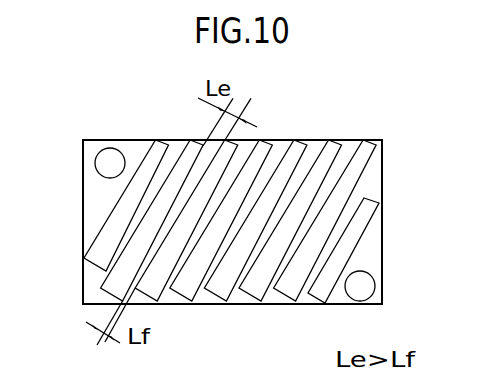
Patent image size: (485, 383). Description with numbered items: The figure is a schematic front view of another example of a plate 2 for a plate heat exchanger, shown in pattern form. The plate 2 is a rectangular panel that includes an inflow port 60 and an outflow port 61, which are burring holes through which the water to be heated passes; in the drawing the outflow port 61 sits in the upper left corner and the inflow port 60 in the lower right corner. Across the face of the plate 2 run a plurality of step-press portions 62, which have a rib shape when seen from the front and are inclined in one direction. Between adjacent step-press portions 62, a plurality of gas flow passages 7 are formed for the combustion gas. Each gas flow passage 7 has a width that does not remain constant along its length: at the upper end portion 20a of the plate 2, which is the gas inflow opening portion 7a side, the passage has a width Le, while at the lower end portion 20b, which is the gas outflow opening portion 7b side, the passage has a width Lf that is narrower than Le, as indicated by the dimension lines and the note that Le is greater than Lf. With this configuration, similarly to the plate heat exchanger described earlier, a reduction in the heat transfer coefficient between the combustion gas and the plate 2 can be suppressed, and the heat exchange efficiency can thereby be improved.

The plate 2 is at (80, 192).
The gas flow passage 7 is at (188, 183).
The gas inflow opening portion 7a is at (283, 142).
The gas outflow opening portion 7b is at (201, 304).
The upper end portion 20a is at (322, 141).
The lower end portion 20b is at (268, 304).
The inflow port 60 is at (363, 285).
The outflow port 61 is at (108, 157).
The step-press portion 62 is at (135, 251).